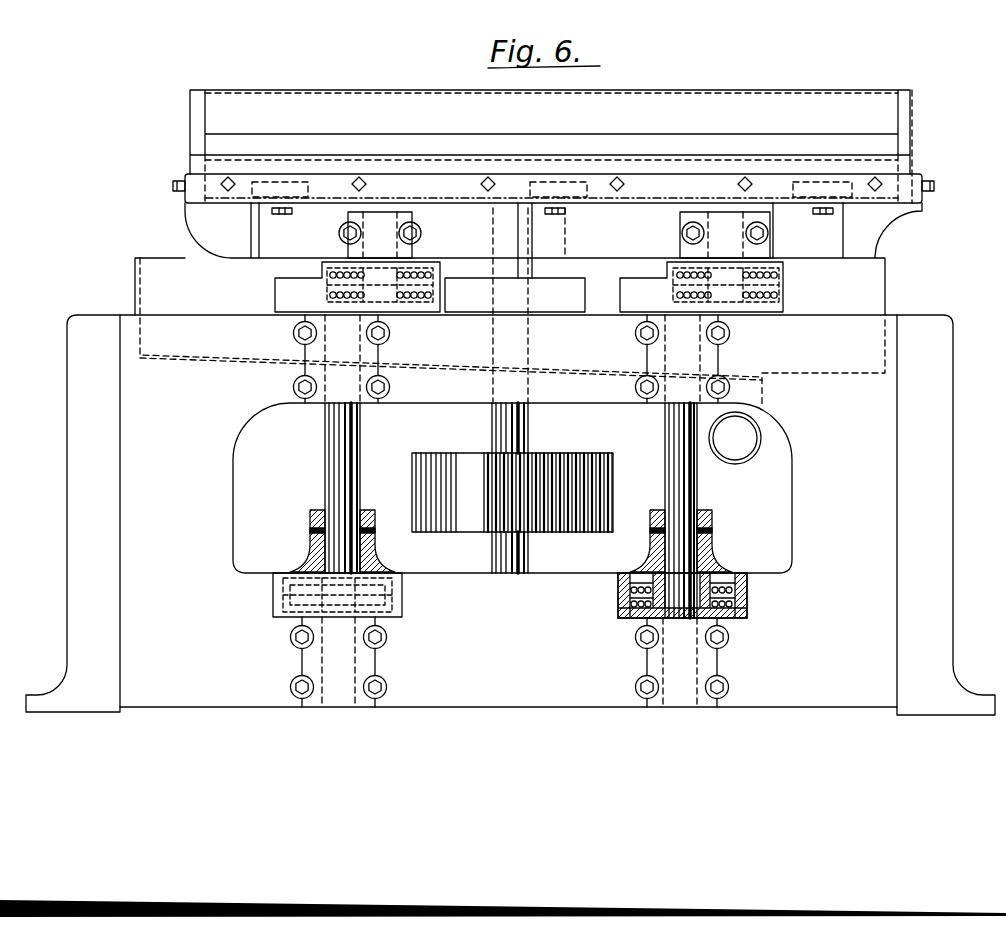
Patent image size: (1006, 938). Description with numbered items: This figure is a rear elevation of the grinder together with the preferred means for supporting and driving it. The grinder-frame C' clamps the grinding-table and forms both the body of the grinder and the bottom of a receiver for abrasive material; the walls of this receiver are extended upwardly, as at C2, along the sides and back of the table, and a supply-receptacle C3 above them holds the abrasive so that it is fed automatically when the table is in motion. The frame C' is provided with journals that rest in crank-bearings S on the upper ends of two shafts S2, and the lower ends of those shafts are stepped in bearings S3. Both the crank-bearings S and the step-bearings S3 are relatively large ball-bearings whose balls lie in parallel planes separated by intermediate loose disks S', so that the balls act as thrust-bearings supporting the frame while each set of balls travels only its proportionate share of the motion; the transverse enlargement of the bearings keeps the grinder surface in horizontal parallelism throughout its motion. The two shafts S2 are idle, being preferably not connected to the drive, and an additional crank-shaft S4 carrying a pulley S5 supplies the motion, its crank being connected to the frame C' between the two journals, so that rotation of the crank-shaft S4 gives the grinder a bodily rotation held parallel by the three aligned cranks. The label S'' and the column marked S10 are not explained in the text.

The supply-receptacle C3 is at (551, 146).
The upwardly extended receptacle walls C2 is at (905, 131).
The grinder-frame C' is at (553, 303).
The crank-bearings S is at (533, 262).
The intermediate loose disks S' is at (577, 460).
The upper ball bearing S'' is at (512, 281).
The idle shafts S2 is at (700, 478).
The step-bearings S3 is at (403, 598).
The crank-shaft S4 is at (528, 428).
The pulley S5 is at (598, 453).
The supporting column S10 is at (362, 458).